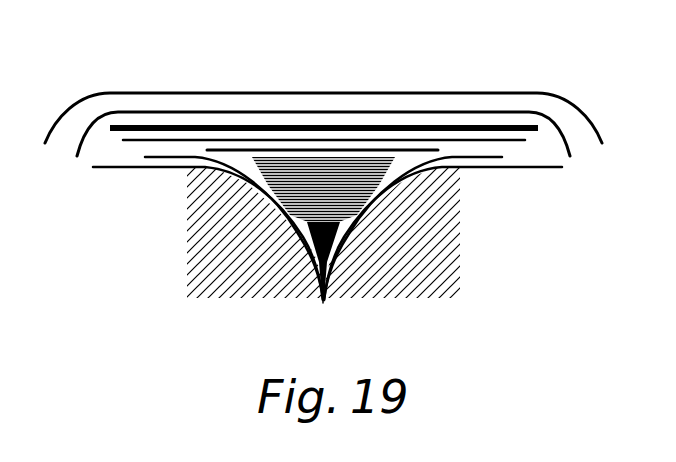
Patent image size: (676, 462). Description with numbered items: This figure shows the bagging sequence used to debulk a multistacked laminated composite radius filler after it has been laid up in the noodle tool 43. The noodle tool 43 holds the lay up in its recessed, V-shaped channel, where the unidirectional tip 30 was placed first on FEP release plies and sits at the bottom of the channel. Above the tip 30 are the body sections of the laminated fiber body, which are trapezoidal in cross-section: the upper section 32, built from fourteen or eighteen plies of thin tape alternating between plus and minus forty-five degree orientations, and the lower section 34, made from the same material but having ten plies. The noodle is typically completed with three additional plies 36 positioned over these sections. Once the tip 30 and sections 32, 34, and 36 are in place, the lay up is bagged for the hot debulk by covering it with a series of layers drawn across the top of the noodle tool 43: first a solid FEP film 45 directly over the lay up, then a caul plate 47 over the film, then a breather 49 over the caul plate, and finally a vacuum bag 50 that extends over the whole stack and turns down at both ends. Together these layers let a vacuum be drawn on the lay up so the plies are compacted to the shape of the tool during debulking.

The unidirectional tip 30 is at (332, 243).
The upper section 32 is at (380, 207).
The lower section 34 is at (215, 180).
The additional plies 36 is at (430, 155).
The noodle tool 43 is at (446, 276).
The solid FEP film 45 is at (525, 140).
The caul plate 47 is at (427, 127).
The breather 49 is at (265, 112).
The vacuum bag 50 is at (372, 92).